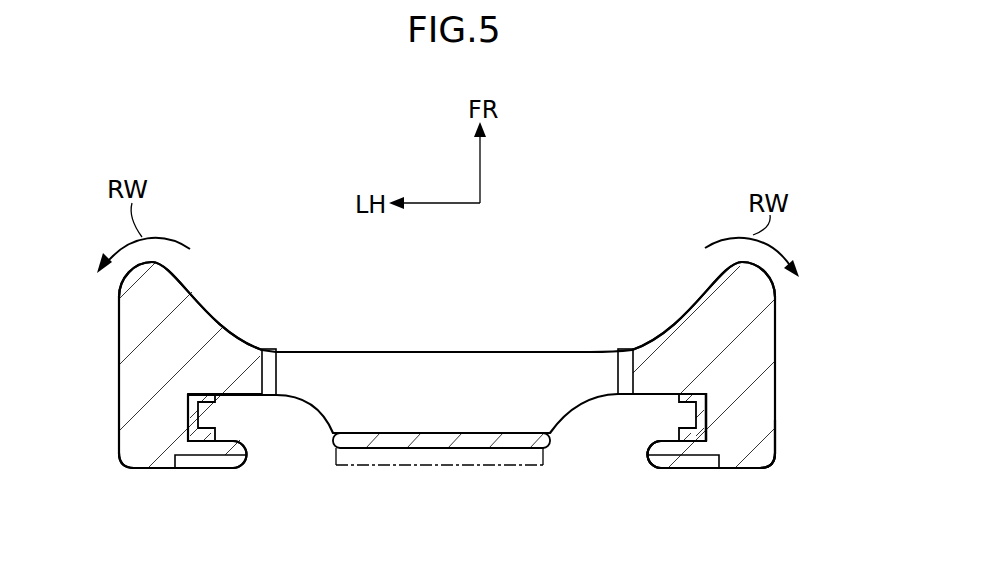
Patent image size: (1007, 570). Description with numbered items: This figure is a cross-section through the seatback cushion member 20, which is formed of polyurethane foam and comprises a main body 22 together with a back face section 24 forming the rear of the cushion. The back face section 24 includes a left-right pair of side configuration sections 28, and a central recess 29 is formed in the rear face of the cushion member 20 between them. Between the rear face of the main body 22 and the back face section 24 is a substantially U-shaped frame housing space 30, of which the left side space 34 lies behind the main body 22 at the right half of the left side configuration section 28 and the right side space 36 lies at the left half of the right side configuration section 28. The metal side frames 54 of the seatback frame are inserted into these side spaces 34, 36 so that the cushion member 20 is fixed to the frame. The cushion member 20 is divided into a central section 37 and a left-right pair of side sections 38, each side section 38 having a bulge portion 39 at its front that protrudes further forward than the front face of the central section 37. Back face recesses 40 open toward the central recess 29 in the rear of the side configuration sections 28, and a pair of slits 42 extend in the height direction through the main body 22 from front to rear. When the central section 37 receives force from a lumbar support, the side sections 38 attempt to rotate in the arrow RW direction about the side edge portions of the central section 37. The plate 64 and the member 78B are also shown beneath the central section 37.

The cushion member 20 is at (446, 328).
The main body 22 is at (338, 357).
The back face section 24 is at (753, 468).
The side configuration section 28 is at (162, 468).
The central recess 29 is at (647, 448).
The frame housing space 30 is at (673, 394).
The right side space 36 is at (673, 394).
The left side space 34 is at (232, 394).
The central section 37 is at (543, 352).
The side section 38 is at (125, 346).
The bulge portion 39 is at (173, 277).
The back face recess 40 is at (208, 457).
The slit 42 is at (268, 350).
The side frame 54 is at (192, 415).
The pad plate 64 is at (483, 443).
The bracket 78B is at (404, 466).